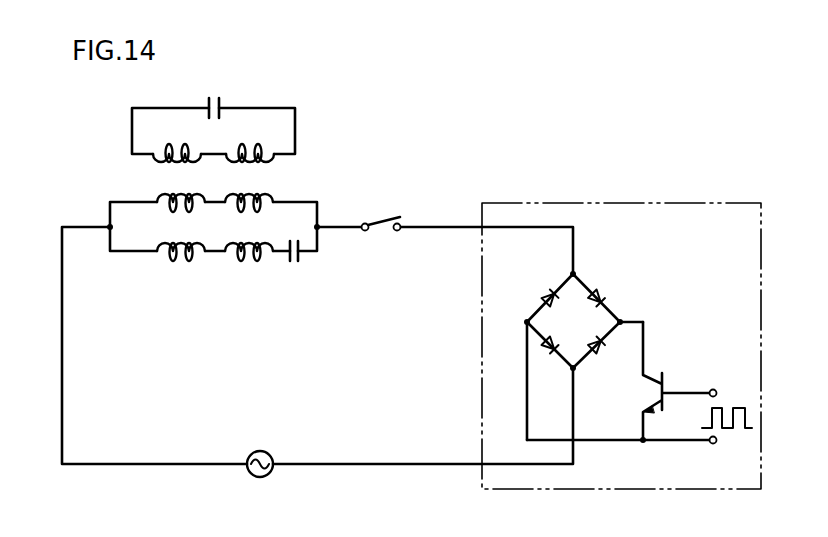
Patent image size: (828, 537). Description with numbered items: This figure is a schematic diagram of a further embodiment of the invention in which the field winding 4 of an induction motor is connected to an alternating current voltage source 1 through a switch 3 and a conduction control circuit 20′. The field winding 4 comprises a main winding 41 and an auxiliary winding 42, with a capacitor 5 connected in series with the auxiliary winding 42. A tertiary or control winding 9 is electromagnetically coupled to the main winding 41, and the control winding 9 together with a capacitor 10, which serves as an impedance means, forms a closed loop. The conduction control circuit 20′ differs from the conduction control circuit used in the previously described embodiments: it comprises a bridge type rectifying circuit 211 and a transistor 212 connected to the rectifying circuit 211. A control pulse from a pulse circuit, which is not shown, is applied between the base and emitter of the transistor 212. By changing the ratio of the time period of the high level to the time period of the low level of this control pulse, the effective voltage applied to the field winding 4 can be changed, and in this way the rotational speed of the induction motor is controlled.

The alternating current voltage source 1 is at (271, 455).
The switch 3 is at (380, 231).
The field winding 4 is at (303, 217).
The main winding 41 is at (233, 210).
The auxiliary winding 42 is at (242, 260).
The capacitor 5 is at (290, 255).
The control winding 9 is at (193, 148).
The capacitor 10 is at (221, 102).
The conduction control circuit 20′ is at (488, 358).
The bridge type rectifying circuit 211 is at (599, 320).
The transistor 212 is at (664, 384).